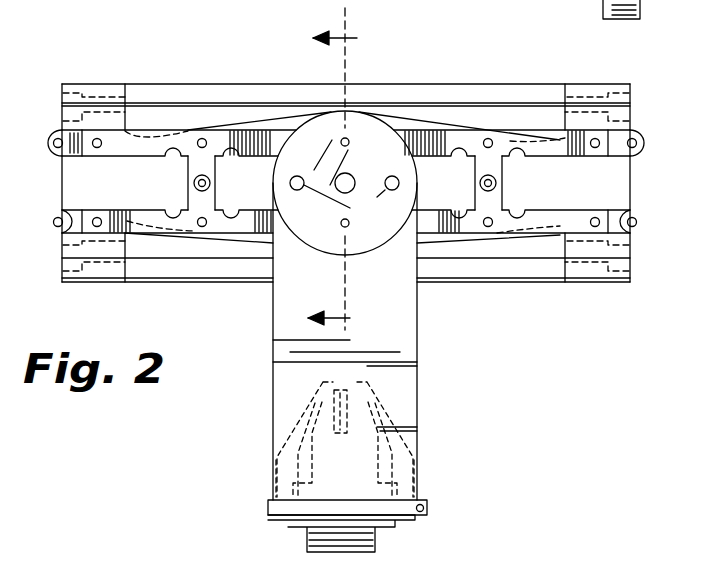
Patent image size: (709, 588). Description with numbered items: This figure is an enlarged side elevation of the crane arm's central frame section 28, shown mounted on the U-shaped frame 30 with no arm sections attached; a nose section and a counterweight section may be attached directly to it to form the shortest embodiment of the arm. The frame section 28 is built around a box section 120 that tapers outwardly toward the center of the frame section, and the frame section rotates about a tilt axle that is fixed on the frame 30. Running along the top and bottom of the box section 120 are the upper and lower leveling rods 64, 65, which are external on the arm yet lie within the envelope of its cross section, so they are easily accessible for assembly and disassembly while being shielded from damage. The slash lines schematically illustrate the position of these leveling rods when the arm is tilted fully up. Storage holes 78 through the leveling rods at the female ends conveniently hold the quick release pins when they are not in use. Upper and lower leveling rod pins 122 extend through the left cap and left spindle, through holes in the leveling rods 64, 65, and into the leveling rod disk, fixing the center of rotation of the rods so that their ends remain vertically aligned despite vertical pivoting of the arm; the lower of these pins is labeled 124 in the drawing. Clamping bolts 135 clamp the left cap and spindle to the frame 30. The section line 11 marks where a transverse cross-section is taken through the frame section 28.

The section line 11- 11 is at (345, 171).
The central frame section 28 is at (440, 53).
The frame 30 is at (402, 390).
The upper leveling rod 64 is at (540, 138).
The lower leveling rod 65 is at (583, 222).
The storage holes 78 is at (612, 142).
The box section 120 is at (427, 240).
The leveling rod pins 122 is at (348, 140).
The lower pivot hole 124 is at (344, 227).
The clamping bolts 135 is at (348, 209).